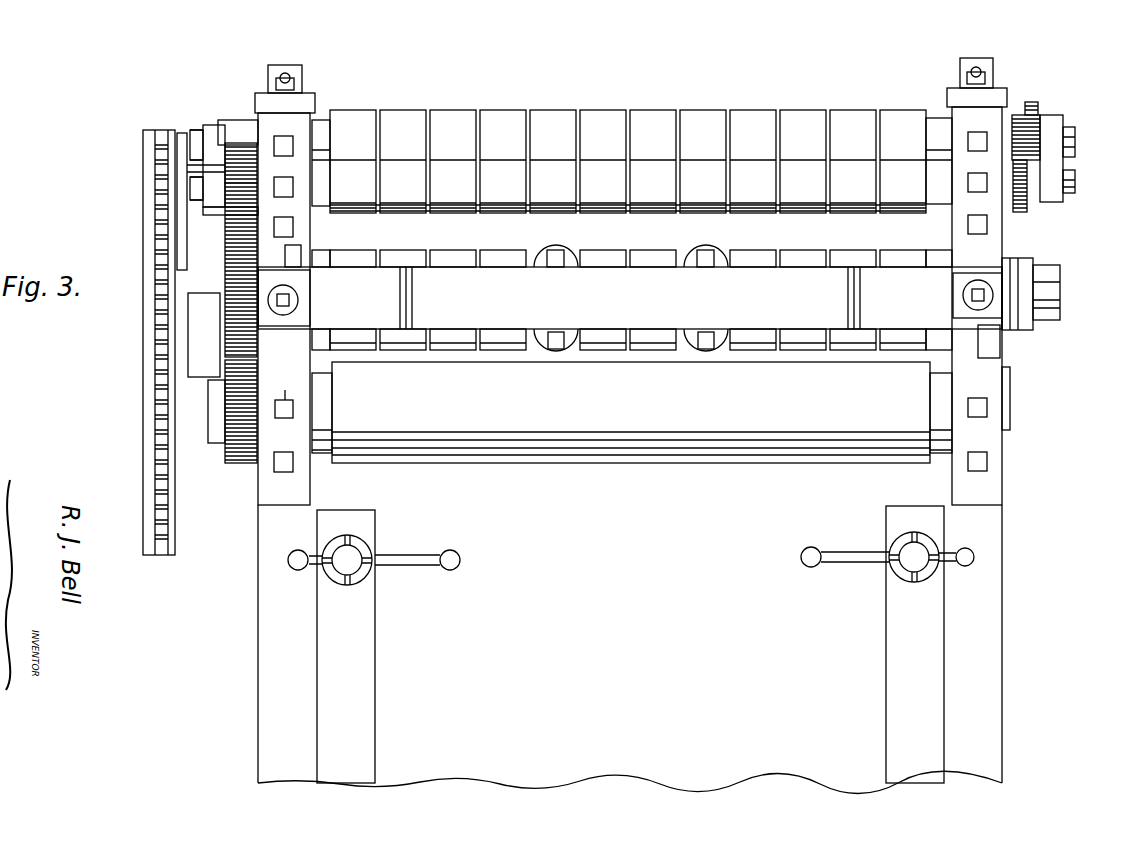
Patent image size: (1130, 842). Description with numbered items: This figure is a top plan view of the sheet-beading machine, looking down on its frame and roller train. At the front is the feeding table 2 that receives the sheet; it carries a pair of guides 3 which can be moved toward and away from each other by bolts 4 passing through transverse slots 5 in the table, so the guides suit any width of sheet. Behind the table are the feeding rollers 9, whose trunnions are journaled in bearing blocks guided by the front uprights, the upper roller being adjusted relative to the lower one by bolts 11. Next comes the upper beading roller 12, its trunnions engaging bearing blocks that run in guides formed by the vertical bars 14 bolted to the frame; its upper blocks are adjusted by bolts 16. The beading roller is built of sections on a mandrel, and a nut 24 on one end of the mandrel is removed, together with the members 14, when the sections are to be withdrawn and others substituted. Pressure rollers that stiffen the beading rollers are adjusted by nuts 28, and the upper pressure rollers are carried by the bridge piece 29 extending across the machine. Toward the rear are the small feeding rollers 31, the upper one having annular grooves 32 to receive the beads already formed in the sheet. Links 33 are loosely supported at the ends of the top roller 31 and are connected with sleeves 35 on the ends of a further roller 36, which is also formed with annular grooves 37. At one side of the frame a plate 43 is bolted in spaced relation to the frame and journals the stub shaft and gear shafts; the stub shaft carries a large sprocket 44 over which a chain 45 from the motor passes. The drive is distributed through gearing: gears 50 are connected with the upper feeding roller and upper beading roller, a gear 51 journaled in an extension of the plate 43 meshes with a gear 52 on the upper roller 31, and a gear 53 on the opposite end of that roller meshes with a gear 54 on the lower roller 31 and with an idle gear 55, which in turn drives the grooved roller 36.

The feeding table 2 is at (630, 649).
The guides 3 is at (358, 675).
The bolts 4 is at (355, 568).
The transverse slots 5 is at (415, 552).
The feeding rollers 9 is at (632, 412).
The bolts 11 is at (288, 392).
The beading roller 12 is at (803, 250).
The vertical bars 14 is at (292, 252).
The bolts 16 is at (300, 300).
The nut 24 is at (1052, 295).
The adjusting nuts 28 is at (555, 350).
The bridge piece 29 is at (630, 300).
The small feeding rollers 31 is at (507, 210).
The annular grooves 32 is at (583, 210).
The links 33 is at (215, 135).
The sleeves 35 is at (245, 125).
The roller 36 is at (455, 115).
The annular grooves 37 is at (680, 110).
The plate 43 is at (188, 215).
The large sprocket 44 is at (160, 312).
The chain 45 is at (150, 465).
The gears 50 is at (232, 343).
The gear 51 is at (228, 232).
The gear 52 is at (220, 190).
The gear 53 is at (1025, 210).
The gear 54 is at (1018, 118).
The idle gear 55 is at (1035, 105).